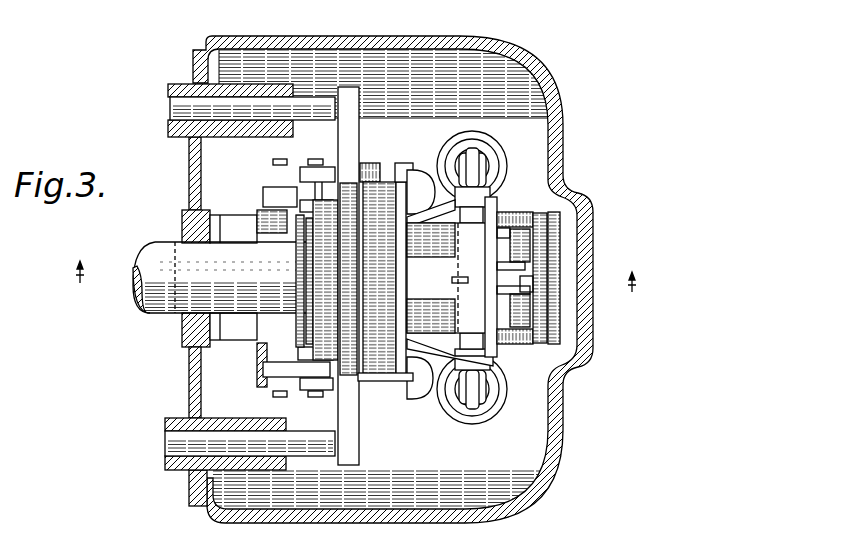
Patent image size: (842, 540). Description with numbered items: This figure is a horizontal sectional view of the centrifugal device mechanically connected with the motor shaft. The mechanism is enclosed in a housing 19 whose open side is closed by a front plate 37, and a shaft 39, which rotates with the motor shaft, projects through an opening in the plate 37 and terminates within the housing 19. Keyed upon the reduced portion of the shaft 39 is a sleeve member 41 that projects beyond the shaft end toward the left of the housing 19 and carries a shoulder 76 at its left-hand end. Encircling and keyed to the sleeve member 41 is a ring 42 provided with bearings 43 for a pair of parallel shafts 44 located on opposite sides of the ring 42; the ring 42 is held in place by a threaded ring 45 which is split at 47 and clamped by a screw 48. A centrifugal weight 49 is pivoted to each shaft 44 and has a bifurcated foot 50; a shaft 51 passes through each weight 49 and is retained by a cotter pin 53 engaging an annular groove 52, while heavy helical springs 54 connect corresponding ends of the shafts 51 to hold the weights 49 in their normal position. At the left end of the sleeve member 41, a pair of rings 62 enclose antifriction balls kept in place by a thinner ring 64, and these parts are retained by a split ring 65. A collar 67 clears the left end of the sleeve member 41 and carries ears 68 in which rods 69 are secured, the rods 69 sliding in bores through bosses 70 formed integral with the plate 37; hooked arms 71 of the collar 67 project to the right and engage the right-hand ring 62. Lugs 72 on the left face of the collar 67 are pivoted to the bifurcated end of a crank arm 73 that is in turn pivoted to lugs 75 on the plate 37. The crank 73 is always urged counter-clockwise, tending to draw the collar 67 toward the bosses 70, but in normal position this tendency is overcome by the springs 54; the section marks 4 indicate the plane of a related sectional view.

The housing 19 is at (450, 46).
The front plate 37 is at (189, 367).
The shaft 39 is at (221, 277).
The sleeve member 41 is at (325, 280).
The ring 42 is at (513, 219).
The bearings 43 is at (520, 252).
The shafts 44 is at (540, 226).
The ring 45 is at (540, 277).
The split 47 is at (520, 300).
The screw 48 is at (548, 291).
The centrifugal weight 49 is at (450, 278).
The bifurcated feet 50 is at (533, 290).
The shaft 51 is at (470, 352).
The annular groove 52 is at (458, 283).
The cotter pins 53 is at (471, 370).
The helical springs 54 is at (500, 158).
The rings 62 is at (403, 182).
The ring 64 is at (407, 268).
The split ring 65 is at (365, 382).
The collar 67 is at (348, 279).
The ears 68 is at (351, 157).
The rods 69 is at (331, 118).
The bosses 70 is at (268, 134).
The hooked arms 71 is at (376, 181).
The lugs 72 is at (311, 200).
The crank arm 73 is at (264, 334).
The lugs 75 is at (241, 242).
The shoulder 76 is at (312, 273).
The section line 4 is at (361, 276).